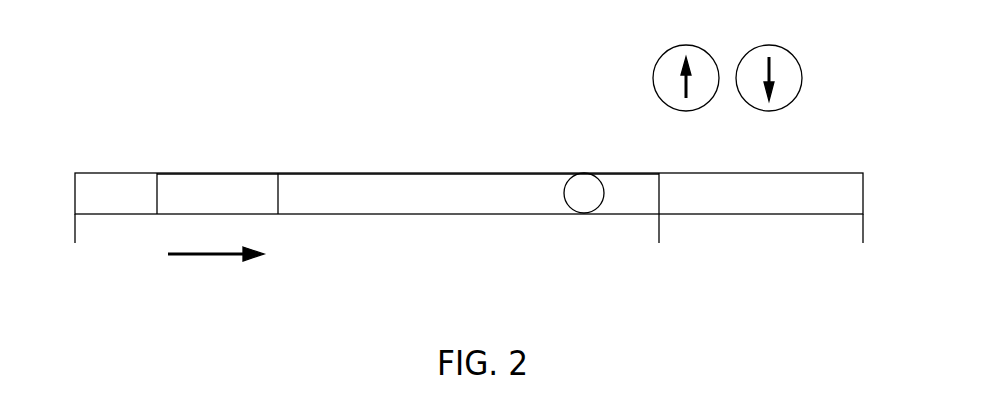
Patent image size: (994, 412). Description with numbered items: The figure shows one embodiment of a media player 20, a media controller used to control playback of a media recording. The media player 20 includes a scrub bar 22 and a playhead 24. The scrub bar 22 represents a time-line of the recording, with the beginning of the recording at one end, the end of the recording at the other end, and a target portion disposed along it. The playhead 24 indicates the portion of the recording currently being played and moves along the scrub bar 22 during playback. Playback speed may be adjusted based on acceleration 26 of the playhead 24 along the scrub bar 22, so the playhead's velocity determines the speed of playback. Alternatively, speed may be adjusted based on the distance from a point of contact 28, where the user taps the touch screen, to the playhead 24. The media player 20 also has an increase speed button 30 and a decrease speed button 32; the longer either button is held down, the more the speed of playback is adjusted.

The media player 20 is at (470, 81).
The scrub bar 22 is at (320, 173).
The playhead 24 is at (217, 173).
The acceleration 26 is at (211, 257).
The point of contact 28 is at (583, 213).
The increase speed button 30 is at (685, 112).
The decrease speed button 32 is at (768, 112).